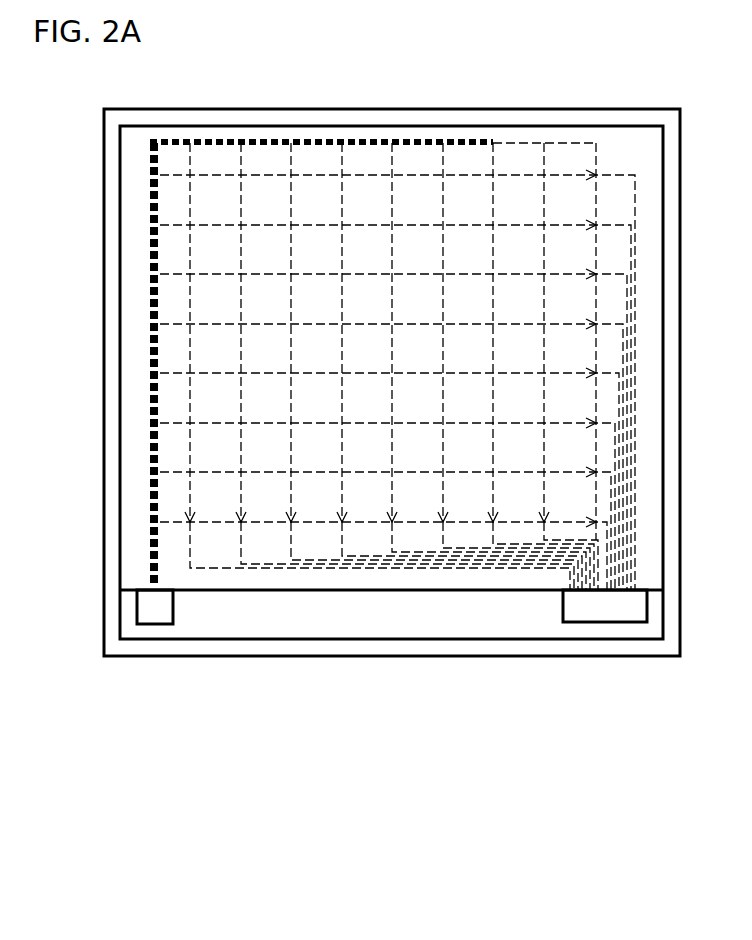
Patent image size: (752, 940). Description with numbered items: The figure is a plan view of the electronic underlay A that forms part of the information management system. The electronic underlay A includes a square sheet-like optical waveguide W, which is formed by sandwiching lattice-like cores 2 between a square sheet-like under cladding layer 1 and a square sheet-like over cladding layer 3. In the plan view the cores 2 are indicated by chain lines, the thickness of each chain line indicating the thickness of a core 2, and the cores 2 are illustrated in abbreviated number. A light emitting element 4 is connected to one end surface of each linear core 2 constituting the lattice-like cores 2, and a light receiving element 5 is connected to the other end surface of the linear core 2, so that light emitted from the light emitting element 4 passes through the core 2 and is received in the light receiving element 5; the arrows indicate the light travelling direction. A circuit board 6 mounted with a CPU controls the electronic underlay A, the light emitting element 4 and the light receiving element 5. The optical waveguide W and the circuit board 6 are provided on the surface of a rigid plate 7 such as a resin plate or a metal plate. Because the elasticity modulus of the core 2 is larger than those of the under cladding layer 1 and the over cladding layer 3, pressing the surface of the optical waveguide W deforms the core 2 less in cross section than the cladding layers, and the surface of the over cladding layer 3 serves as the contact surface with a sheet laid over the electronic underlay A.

The under cladding layer 1 is at (274, 584).
The lattice-like cores 2 is at (158, 490).
The over cladding layer 3 is at (478, 580).
The light emitting element 4 is at (153, 605).
The light receiving element 5 is at (613, 607).
The circuit board 6 is at (223, 623).
The rigid plate 7 is at (547, 652).
The optical waveguide W is at (497, 748).
The electronic underlay A is at (633, 831).